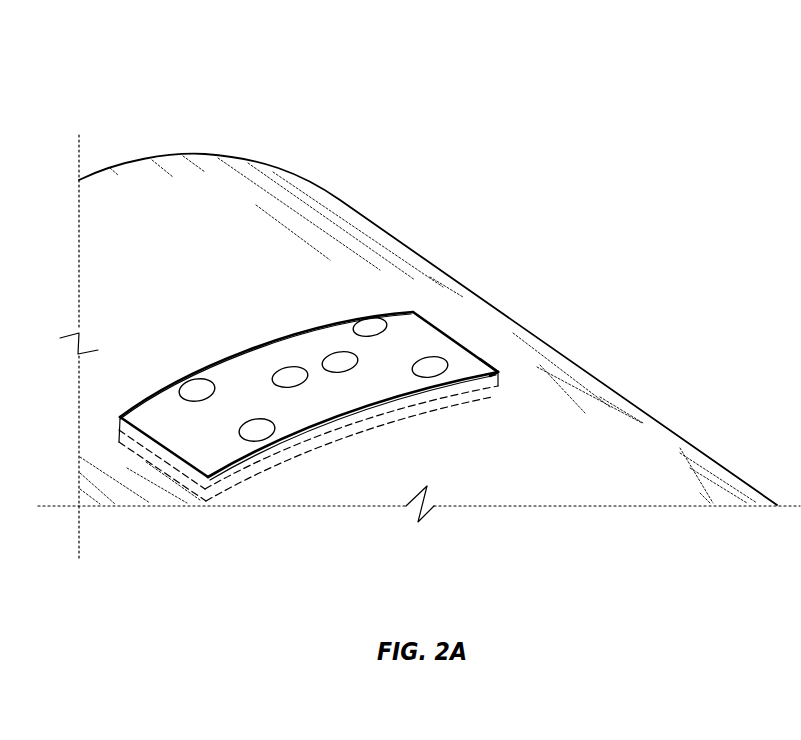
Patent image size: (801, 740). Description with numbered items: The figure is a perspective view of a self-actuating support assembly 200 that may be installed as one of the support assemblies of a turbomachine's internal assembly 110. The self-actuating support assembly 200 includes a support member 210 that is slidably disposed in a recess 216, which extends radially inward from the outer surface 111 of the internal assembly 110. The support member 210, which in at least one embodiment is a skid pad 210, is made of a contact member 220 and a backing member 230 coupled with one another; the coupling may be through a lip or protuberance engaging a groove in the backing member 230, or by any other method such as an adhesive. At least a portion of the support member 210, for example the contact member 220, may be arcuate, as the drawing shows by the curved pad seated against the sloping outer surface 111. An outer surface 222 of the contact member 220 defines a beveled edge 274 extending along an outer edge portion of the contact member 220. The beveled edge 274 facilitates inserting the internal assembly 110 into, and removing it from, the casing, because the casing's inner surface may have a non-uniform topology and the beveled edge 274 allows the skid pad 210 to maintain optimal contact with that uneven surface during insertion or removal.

The self-actuating support assembly 200 is at (122, 68).
The internal assembly 110 is at (683, 430).
The outer surface 111 is at (617, 393).
The support member 210 is at (212, 331).
The outer surface 222 is at (272, 352).
The contact member 220 is at (452, 333).
The recess 216 is at (486, 349).
The beveled edge 274 is at (384, 399).
The backing member 230 is at (488, 392).